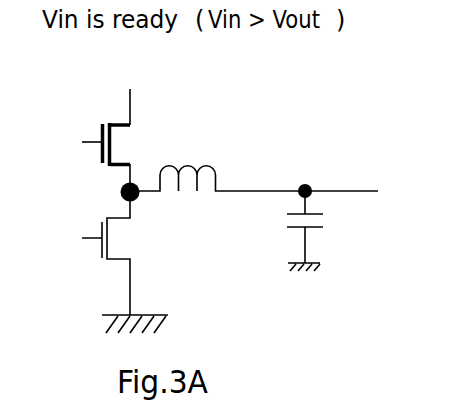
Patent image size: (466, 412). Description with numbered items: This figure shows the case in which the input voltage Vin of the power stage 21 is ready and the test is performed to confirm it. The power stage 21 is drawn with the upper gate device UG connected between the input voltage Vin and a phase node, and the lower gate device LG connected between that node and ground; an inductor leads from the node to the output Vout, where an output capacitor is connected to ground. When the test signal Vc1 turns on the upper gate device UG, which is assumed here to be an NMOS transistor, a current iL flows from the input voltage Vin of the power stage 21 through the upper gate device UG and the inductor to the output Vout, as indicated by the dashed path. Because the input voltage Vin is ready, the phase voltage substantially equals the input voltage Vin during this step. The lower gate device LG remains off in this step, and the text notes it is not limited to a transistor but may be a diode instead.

The power stage 21 is at (316, 77).
The input voltage Vin is at (132, 87).
The test signal Vc1 is at (85, 135).
The upper gate device UG is at (136, 162).
The lower gate device LG is at (126, 267).
The current iL is at (281, 259).
The output Vout is at (344, 213).